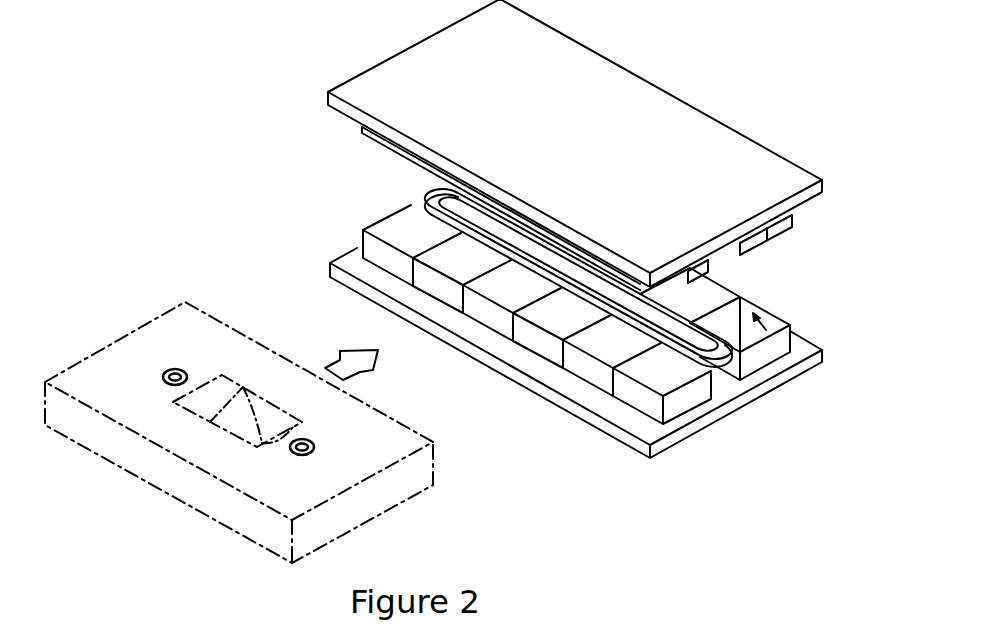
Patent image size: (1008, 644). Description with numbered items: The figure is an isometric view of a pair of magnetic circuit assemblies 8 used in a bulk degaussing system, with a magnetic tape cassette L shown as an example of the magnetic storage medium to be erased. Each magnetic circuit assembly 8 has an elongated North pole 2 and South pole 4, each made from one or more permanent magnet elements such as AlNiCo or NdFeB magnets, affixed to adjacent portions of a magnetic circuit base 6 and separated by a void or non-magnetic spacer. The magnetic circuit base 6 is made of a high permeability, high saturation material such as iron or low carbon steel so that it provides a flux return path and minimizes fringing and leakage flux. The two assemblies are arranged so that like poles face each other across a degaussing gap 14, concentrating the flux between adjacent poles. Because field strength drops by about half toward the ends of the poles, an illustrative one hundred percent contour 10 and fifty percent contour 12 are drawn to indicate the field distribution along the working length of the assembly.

The North pole 2 is at (712, 277).
The South pole 4 is at (797, 225).
The magnetic circuit base 6 is at (385, 107).
The magnetic circuit assembly 8 is at (737, 124).
The 100% contour 10 is at (447, 188).
The 50% contour 12 is at (433, 194).
The degaussing gap 14 is at (774, 352).
The magnetic tape cassette L is at (177, 323).